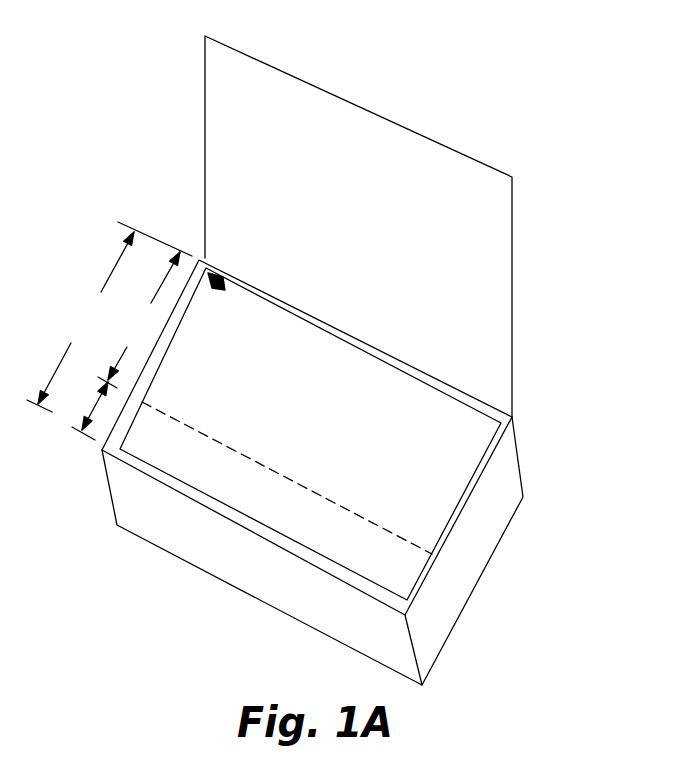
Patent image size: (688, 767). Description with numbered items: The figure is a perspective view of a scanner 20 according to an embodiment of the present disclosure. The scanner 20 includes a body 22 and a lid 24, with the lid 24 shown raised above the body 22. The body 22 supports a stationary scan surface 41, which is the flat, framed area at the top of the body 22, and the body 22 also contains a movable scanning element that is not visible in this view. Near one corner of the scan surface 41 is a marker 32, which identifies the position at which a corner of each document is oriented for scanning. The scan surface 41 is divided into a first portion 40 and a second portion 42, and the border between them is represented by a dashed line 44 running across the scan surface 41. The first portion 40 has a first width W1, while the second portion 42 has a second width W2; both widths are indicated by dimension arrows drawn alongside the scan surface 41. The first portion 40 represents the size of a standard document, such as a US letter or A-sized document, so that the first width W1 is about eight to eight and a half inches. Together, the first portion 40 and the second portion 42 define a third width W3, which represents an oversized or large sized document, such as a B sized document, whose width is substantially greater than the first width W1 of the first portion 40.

The scanner 20 is at (314, 360).
The body 22 is at (478, 560).
The lid 24 is at (512, 372).
The marker 32 is at (206, 270).
The first portion 40 is at (249, 380).
The scan surface 41 is at (452, 460).
The second portion 42 is at (206, 474).
The dashed line 44 is at (253, 460).
The first width W1 is at (139, 320).
The second width W2 is at (85, 411).
The third width W3 is at (109, 317).